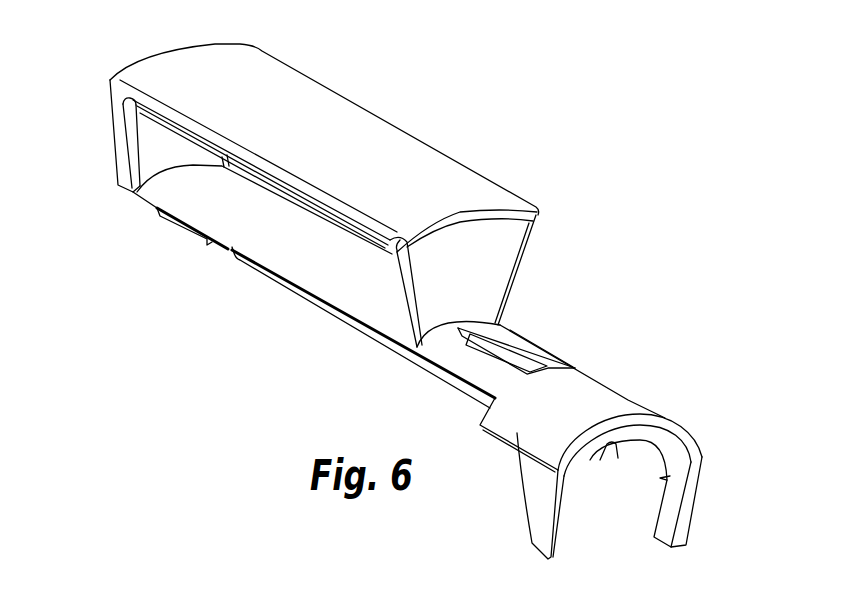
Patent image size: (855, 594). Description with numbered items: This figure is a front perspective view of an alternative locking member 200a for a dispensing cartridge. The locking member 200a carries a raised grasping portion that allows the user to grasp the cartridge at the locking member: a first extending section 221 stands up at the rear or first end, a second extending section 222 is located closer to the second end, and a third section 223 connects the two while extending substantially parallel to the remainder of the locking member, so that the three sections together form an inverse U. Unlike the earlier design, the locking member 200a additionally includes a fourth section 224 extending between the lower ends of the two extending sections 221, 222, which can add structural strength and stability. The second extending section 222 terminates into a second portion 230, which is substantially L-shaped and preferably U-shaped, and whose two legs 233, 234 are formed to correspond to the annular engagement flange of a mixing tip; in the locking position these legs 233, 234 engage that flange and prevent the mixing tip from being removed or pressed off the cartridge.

The locking member 200a is at (560, 158).
The first extending section 221 is at (120, 133).
The second extending section 222 is at (487, 272).
The third section 223 is at (367, 133).
The fourth section 224 is at (247, 231).
The second portion 230 is at (604, 403).
The leg 233 is at (692, 503).
The leg 234 is at (541, 517).